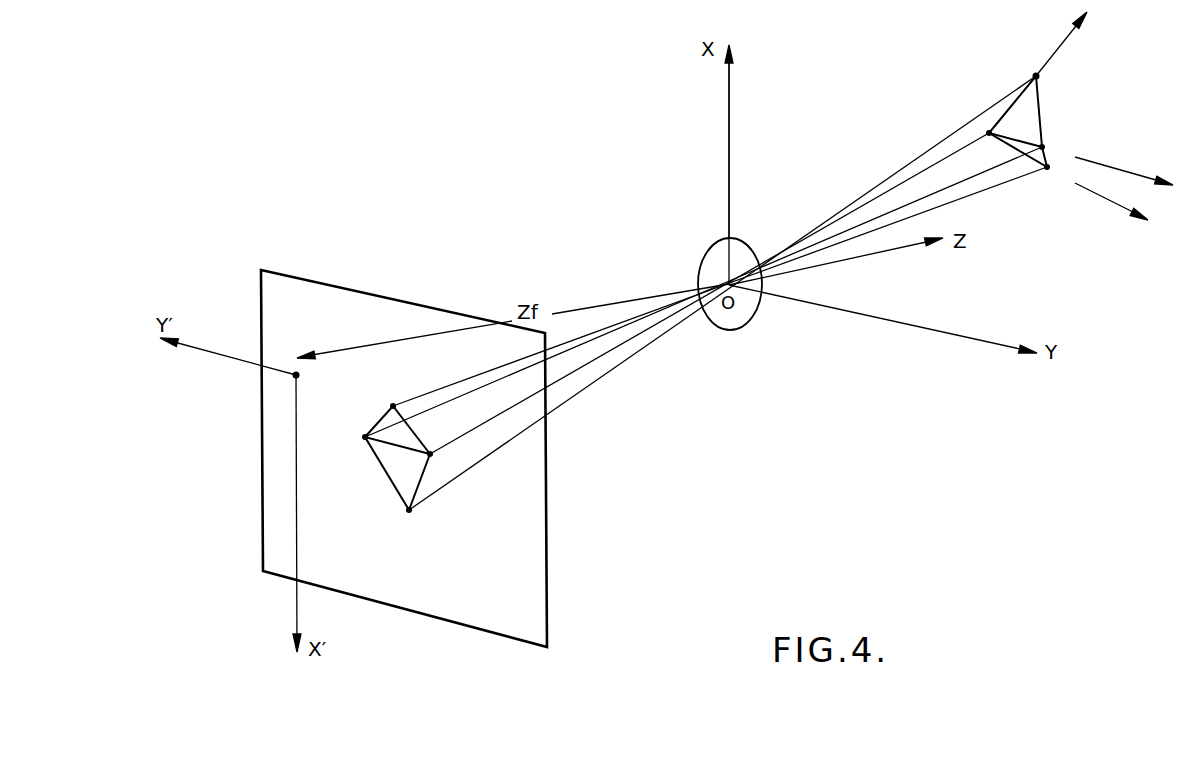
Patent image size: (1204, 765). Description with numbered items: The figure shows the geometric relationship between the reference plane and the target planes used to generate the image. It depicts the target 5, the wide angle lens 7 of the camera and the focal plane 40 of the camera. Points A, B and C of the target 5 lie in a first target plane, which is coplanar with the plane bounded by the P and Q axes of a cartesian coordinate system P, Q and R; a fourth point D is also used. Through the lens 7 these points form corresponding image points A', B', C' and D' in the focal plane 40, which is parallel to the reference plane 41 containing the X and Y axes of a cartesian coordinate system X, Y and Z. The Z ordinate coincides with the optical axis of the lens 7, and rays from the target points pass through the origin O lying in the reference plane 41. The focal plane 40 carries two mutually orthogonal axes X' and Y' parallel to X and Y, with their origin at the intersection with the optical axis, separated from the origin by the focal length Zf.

The target 5 is at (1140, 115).
The wide angle lens 7 is at (713, 242).
The focal plane 40 is at (407, 306).
The reference plane 41 is at (740, 126).